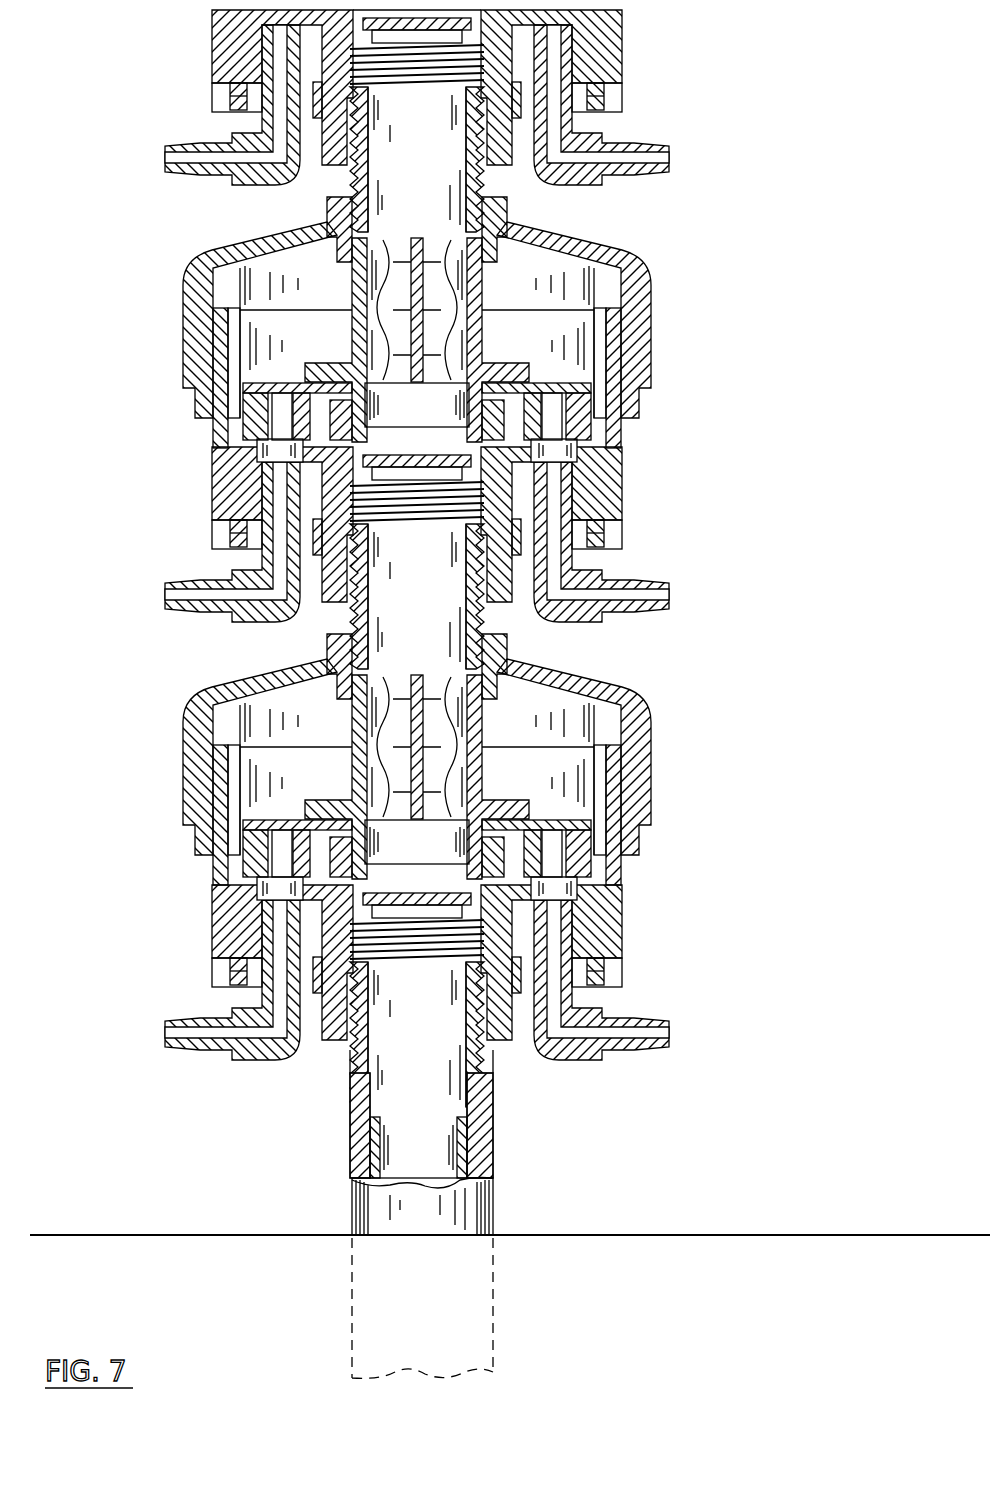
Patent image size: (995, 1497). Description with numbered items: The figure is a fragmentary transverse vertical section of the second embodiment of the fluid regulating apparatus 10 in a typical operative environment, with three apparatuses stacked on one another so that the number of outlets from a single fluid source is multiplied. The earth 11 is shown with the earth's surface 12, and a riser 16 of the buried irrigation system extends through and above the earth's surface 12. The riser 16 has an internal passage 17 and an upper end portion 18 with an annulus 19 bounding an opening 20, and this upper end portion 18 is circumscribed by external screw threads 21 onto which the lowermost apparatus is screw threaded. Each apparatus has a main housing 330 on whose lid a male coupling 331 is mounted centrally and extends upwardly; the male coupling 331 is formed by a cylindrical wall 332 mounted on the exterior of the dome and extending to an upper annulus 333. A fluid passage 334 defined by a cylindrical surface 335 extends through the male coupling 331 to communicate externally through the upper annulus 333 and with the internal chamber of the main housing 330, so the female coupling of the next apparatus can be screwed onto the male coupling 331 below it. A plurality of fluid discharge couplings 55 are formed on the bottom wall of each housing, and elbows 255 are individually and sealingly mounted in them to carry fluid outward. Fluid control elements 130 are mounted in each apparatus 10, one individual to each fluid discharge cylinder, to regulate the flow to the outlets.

The fluid regulating apparatus 10 is at (633, 48).
The main housing 330 is at (632, 68).
The fluid discharge couplings 55 is at (235, 96).
The elbows 255 is at (183, 176).
The fluid control elements 130 is at (243, 437).
The cylindrical surface 335 is at (430, 135).
The upper annulus 333 is at (483, 504).
The male coupling 331 is at (350, 628).
The cylindrical wall 332 is at (487, 629).
The fluid passage 334 is at (383, 636).
The annulus 19 is at (450, 937).
The opening 20 is at (398, 939).
The external screw threads 21 is at (352, 1058).
The upper end portion 18 is at (493, 1097).
The internal passage 17 is at (352, 1117).
The riser 16 is at (352, 1163).
The earth 11 is at (518, 1250).
The earth's surface 12 is at (638, 1234).